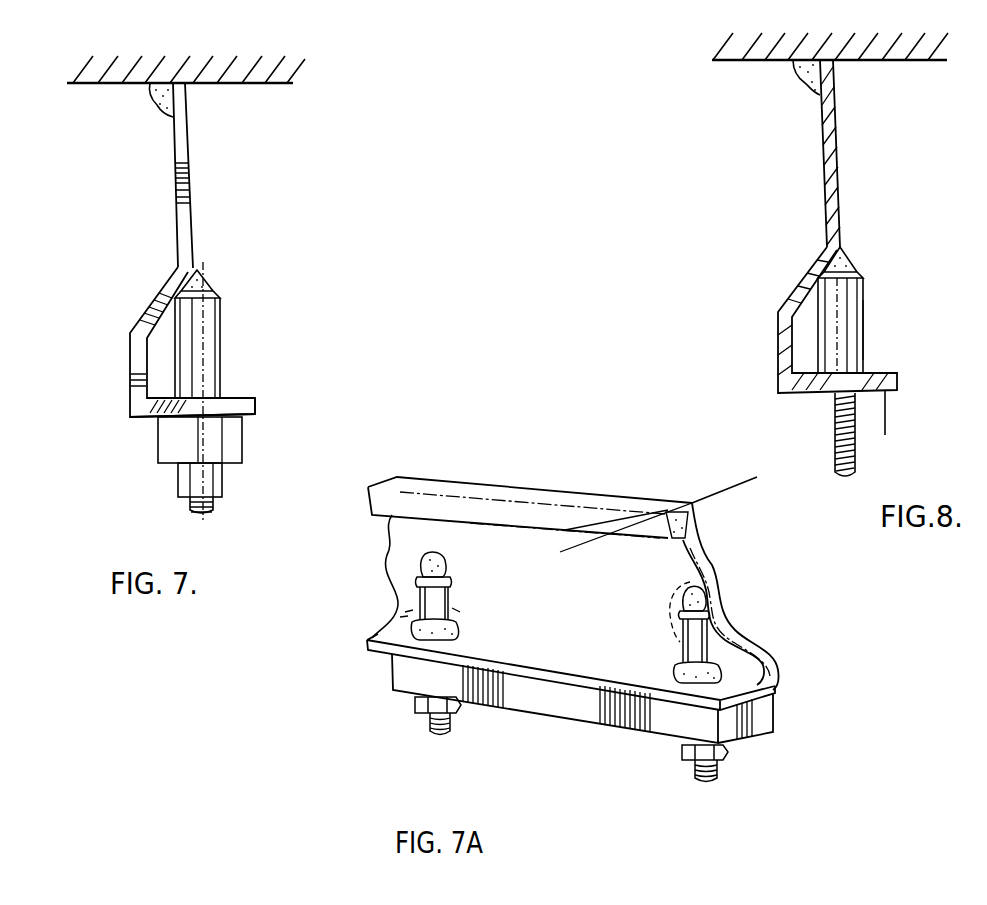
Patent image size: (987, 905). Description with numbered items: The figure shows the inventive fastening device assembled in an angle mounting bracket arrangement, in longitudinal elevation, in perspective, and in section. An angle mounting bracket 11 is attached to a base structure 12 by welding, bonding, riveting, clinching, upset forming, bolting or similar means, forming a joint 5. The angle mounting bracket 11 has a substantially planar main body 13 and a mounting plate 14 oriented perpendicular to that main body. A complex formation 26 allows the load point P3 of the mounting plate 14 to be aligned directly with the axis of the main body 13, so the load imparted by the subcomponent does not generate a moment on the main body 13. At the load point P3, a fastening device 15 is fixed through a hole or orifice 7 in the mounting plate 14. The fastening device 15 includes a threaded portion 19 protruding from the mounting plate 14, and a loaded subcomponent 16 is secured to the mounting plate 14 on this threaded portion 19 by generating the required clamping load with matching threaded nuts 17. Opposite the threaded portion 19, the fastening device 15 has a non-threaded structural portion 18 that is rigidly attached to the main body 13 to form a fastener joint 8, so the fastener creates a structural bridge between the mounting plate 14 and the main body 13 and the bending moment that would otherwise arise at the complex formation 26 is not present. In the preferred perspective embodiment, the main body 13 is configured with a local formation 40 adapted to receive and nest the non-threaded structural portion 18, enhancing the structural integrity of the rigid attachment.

In FIG. 7, the joint 5 is at (157, 106).
In FIG. 8, the joint 5 is at (801, 87).
In FIG. 7A, the joint 5 is at (367, 507).
In FIG. 8, the hole or orifice 7 is at (826, 401).
In FIG. 7, the fastener joint 8 is at (207, 269).
In FIG. 8, the fastener joint 8 is at (861, 247).
In FIG. 7A, the fastener joint 8 is at (420, 559).
In FIG. 7, the angle mounting bracket 11 is at (260, 403).
In FIG. 7A, the angle mounting bracket 11 is at (578, 675).
In FIG. 7, the base structure 12 is at (90, 91).
In FIG. 8, the base structure 12 is at (730, 67).
In FIG. 7A, the base structure 12 is at (741, 497).
In FIG. 7, the main body 13 is at (171, 208).
In FIG. 8, the main body 13 is at (818, 172).
In FIG. 7A, the main body 13 is at (704, 558).
In FIG. 7, the mounting plate 14 is at (245, 421).
In FIG. 8, the mounting plate 14 is at (893, 393).
In FIG. 7, the fastening device 15 is at (215, 345).
In FIG. 8, the fastening device 15 is at (858, 302).
In FIG. 7A, the fastening device 15 is at (724, 778).
In FIG. 7, the loaded subcomponent 16 is at (211, 479).
In FIG. 7A, the loaded subcomponent 16 is at (758, 716).
In FIG. 7, the threaded nuts 17 is at (179, 479).
In FIG. 7A, the threaded nuts 17 is at (413, 708).
In FIG. 8, the non-threaded structural portion 18 is at (868, 341).
In FIG. 7A, the non-threaded structural portion 18 is at (698, 638).
In FIG. 8, the threaded portion 19 is at (857, 447).
In FIG. 7A, the threaded portion 19 is at (424, 735).
In FIG. 7, the complex formation 26 is at (135, 367).
In FIG. 8, the complex formation 26 is at (774, 318).
In FIG. 7A, the local formation 40 is at (704, 596).
In FIG. 7, the load point P3 is at (189, 421).